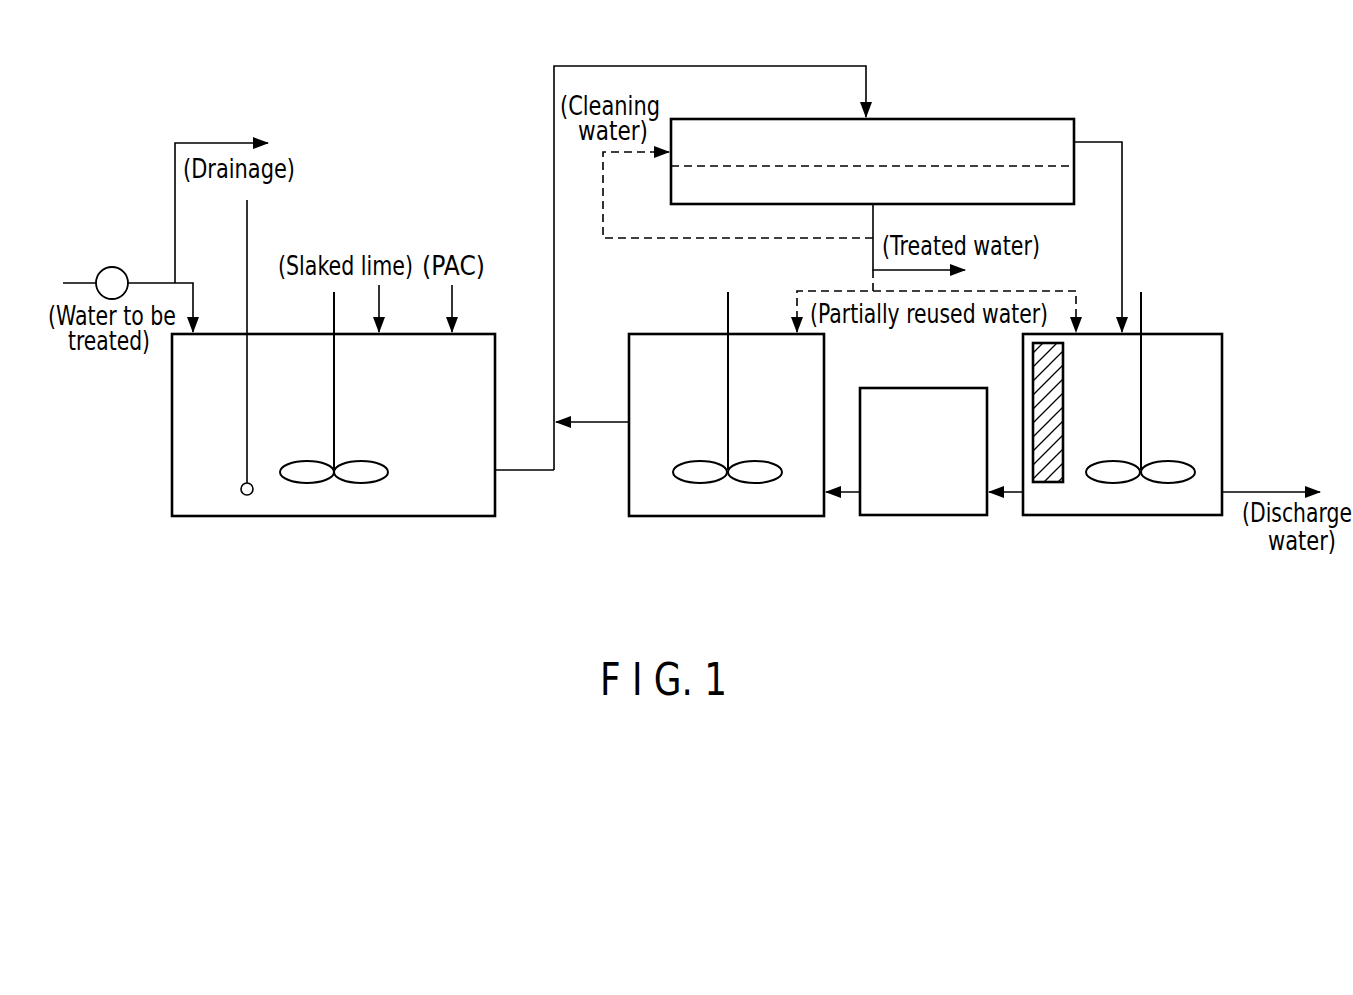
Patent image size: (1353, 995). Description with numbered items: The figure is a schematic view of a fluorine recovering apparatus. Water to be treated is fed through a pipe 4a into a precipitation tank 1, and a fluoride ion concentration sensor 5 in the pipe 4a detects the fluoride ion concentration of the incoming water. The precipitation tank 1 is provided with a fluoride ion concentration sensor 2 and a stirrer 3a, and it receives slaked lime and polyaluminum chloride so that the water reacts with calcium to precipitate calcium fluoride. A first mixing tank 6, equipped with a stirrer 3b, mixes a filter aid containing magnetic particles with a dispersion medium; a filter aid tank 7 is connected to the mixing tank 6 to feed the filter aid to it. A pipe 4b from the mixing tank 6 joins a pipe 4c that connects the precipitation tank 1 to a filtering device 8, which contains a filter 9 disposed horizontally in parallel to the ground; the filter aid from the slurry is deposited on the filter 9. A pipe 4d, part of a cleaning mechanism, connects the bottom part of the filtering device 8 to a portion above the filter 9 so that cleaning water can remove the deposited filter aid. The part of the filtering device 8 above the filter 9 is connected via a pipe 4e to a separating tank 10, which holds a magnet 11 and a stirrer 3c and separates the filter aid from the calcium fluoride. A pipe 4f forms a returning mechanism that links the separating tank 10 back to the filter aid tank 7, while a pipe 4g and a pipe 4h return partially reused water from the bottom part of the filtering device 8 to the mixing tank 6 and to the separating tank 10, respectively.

The precipitation tank 1 is at (356, 520).
The fluoride ion concentration sensor 2 is at (250, 215).
The stirrer 3a is at (336, 385).
The stirrer 3b is at (729, 403).
The stirrer 3c is at (1142, 403).
The pipe 4a is at (76, 281).
The pipe 4b is at (595, 425).
The pipe 4c is at (620, 65).
The pipe 4d is at (640, 240).
The pipe 4e is at (1124, 203).
The pipe 4f is at (1013, 498).
The pipe 4g is at (818, 290).
The pipe 4h is at (1064, 290).
The fluoride ion concentration sensor 5 is at (117, 266).
The first mixing tank 6 is at (668, 520).
The filter aid tank 7 is at (890, 518).
The filtering device 8 is at (920, 118).
The filter 9 is at (1048, 164).
The separating tank 10 is at (1100, 518).
The magnet 11 is at (1031, 373).